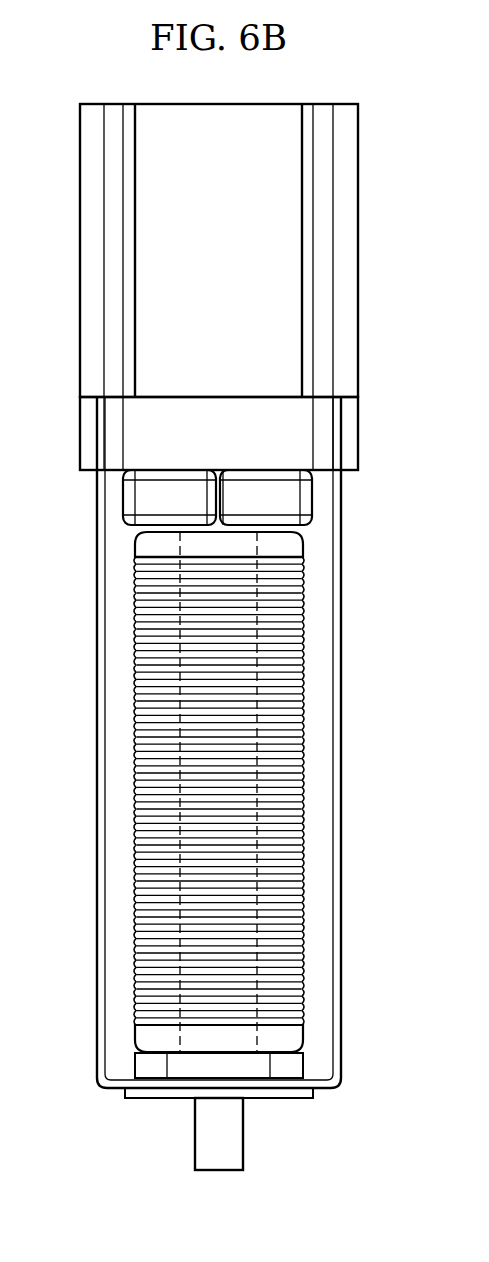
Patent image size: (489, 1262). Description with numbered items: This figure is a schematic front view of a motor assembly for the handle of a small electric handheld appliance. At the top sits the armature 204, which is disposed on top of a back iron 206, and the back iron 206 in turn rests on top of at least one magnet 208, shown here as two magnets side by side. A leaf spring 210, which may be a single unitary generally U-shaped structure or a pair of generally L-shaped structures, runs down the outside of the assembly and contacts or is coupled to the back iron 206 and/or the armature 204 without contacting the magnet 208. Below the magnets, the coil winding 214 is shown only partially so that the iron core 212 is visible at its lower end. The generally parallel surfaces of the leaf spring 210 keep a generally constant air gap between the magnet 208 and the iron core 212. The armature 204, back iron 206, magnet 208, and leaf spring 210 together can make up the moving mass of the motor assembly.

The armature 204 is at (79, 252).
The back iron 206 is at (322, 428).
The magnet 208 is at (317, 498).
The leaf spring 210 is at (342, 773).
The iron core 212 is at (257, 1037).
The coil winding 214 is at (300, 887).